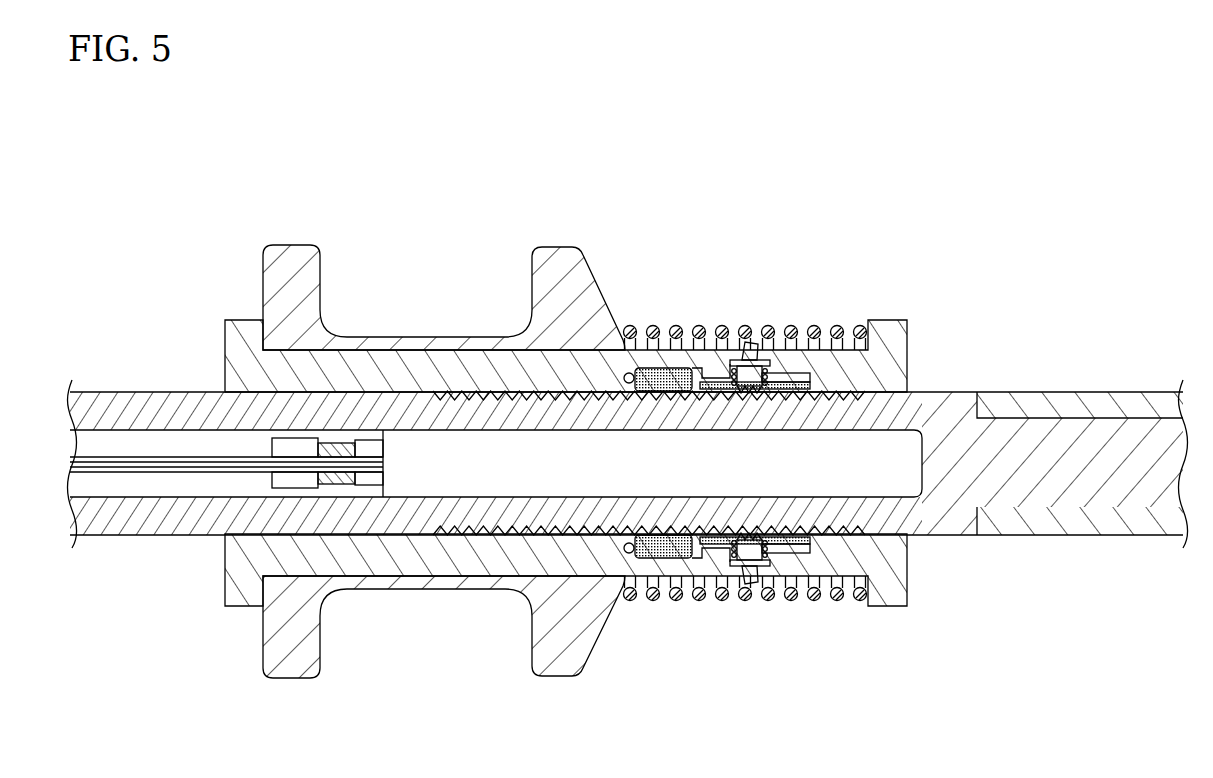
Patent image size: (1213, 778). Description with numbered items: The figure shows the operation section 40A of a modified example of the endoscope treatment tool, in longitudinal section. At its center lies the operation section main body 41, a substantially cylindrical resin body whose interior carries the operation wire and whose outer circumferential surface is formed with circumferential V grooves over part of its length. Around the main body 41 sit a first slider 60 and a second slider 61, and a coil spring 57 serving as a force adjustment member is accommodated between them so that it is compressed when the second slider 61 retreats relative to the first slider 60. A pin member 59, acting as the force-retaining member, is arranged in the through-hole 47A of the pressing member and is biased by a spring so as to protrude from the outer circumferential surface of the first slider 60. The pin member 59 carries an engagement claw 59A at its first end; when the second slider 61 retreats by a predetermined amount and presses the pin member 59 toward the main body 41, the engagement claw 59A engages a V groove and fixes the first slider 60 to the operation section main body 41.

The operation section 40A is at (986, 178).
The operation section main body 41 is at (957, 517).
The through-hole 47A is at (729, 534).
The coil spring 57 is at (803, 600).
The pin member 59 is at (755, 343).
The engagement claw 59A is at (771, 388).
The first slider 60 is at (233, 604).
The second slider 61 is at (371, 582).